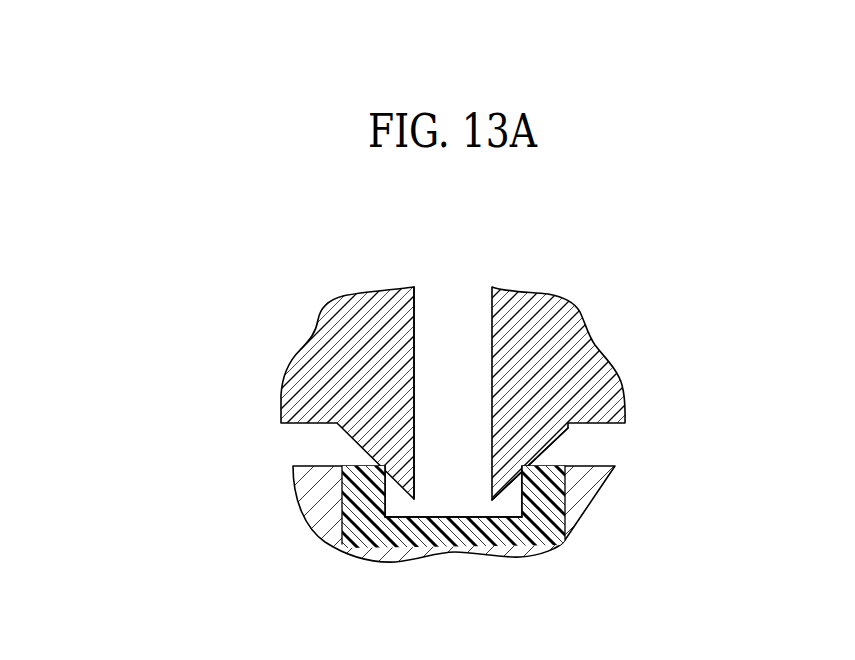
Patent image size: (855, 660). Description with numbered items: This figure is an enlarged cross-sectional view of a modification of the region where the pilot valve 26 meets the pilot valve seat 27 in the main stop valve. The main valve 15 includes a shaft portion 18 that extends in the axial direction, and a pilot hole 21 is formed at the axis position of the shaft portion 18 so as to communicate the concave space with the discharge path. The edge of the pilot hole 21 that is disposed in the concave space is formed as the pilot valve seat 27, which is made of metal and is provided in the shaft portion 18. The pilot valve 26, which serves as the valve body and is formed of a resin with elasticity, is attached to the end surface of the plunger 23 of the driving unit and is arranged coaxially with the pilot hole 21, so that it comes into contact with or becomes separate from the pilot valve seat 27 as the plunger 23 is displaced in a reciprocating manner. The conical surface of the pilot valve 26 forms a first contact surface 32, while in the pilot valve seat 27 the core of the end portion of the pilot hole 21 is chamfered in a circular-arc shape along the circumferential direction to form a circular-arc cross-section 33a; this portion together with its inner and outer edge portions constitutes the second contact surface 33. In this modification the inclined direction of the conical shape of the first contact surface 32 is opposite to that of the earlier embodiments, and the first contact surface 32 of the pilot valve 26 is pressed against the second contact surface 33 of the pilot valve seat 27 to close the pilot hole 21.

The shaft portion 18 is at (427, 330).
The main valve 15 is at (320, 362).
The pilot hole 21 is at (415, 329).
The first contact surface 32 is at (553, 450).
The circular-arc cross-section 33a is at (522, 478).
The second contact surface 33 is at (375, 463).
The plunger 23 is at (580, 490).
The pilot valve seat 27 is at (414, 472).
The pilot valve 26 is at (496, 535).